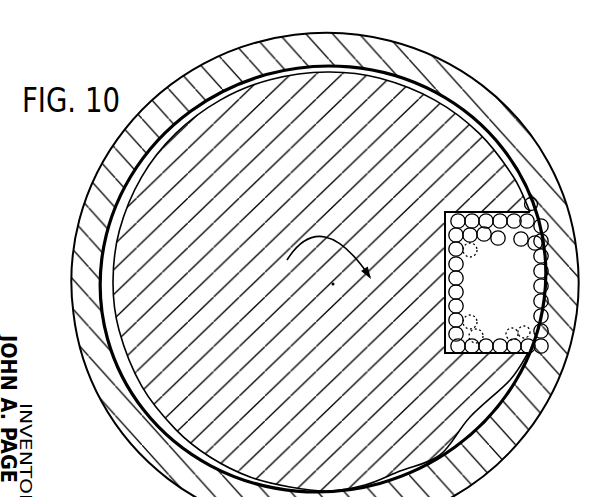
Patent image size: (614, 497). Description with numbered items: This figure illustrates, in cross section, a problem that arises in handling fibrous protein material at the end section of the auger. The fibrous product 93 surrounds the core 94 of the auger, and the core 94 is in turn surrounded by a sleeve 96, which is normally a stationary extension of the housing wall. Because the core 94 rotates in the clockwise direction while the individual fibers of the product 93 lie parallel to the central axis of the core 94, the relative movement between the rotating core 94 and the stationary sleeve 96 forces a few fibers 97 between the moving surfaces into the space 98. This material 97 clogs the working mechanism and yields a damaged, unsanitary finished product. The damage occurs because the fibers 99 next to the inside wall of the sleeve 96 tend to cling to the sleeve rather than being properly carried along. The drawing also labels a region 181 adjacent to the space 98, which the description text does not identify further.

The sleeve 96 is at (485, 108).
The space 98 is at (500, 155).
The pocket 181 is at (452, 212).
The fibers 97 is at (545, 211).
The fibers 99 is at (548, 248).
The fibrous product 93 is at (524, 232).
The core 94 is at (498, 389).